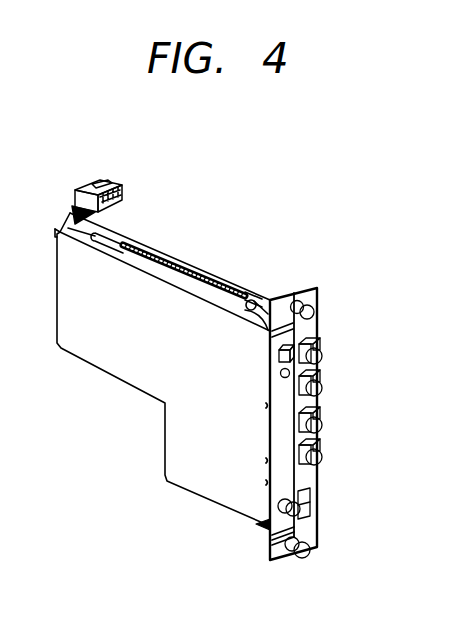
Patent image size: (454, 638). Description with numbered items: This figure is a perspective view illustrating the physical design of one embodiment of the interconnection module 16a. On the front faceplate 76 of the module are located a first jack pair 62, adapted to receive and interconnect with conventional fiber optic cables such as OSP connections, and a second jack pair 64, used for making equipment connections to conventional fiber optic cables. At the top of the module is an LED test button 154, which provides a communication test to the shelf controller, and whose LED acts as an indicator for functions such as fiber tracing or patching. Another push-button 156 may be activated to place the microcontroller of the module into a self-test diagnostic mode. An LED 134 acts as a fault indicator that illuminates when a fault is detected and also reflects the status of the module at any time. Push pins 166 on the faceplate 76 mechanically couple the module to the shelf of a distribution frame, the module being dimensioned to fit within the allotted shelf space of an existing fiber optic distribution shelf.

The interconnection module 16a is at (104, 458).
The LED test button 154 is at (268, 355).
The LED 134 is at (270, 378).
The first jack pair 62 is at (333, 331).
The second jack pair 64 is at (333, 406).
The front faceplate 76 is at (322, 522).
The push-button 156 is at (258, 524).
The push pins 166 is at (305, 560).